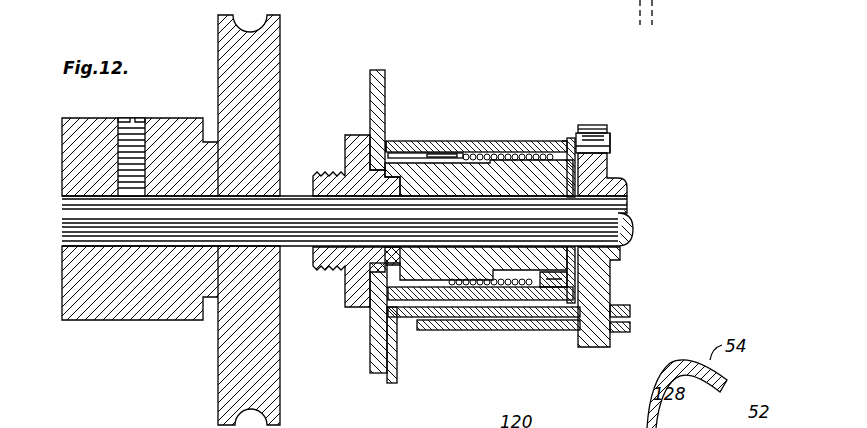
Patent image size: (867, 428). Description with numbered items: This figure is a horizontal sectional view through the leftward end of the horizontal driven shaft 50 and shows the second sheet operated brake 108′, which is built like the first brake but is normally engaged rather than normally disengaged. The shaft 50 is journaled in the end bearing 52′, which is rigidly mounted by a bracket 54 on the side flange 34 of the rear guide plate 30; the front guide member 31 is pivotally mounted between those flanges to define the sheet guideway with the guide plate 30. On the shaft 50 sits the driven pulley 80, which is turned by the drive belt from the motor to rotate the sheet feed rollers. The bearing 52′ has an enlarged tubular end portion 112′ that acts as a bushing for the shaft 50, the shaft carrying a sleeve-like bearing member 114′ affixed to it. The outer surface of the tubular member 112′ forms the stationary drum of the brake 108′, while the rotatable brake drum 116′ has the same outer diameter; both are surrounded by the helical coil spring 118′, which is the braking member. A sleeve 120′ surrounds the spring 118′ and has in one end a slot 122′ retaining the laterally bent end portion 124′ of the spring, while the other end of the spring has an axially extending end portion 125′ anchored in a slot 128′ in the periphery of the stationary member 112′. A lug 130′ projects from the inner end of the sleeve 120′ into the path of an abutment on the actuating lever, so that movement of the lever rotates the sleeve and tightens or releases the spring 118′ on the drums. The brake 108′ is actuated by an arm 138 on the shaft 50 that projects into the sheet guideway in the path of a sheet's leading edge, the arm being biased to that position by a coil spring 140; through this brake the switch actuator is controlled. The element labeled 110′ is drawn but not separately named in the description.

The driven pulley 80 is at (281, 36).
The driven shaft 50 is at (68, 212).
The end bearing 52′ is at (323, 173).
The bracket 54 is at (380, 70).
The second sheet operated brake 108′ is at (534, 138).
The sleeve-like bearing member 114′ is at (482, 150).
The slot 128′ is at (398, 146).
The tubular end portion 112′ is at (410, 156).
The axially extending end portion 125′ is at (445, 155).
The helical coil spring 118′ is at (510, 152).
The rotatable brake drum 116′ is at (565, 140).
The sleeve 120′ is at (570, 138).
The lug 130′ is at (607, 144).
The coil spring 140 is at (613, 140).
The bushing 110′ is at (617, 170).
The slot 122′ is at (557, 288).
The laterally bent end portion 124′ is at (543, 281).
The rear guide plate 30 is at (443, 318).
The front guide member 31 is at (477, 331).
The side flange 34 is at (397, 373).
The arm 138 is at (610, 287).